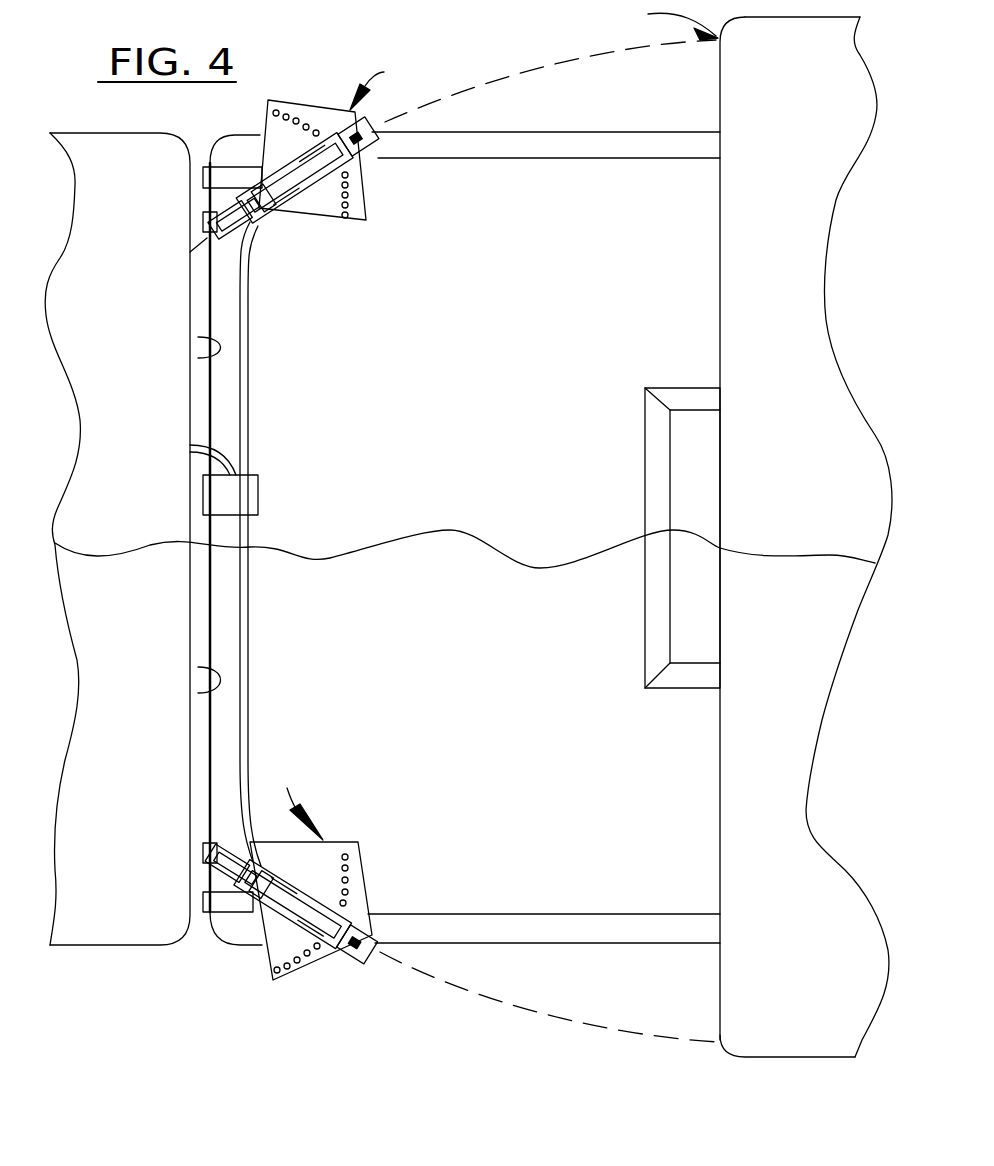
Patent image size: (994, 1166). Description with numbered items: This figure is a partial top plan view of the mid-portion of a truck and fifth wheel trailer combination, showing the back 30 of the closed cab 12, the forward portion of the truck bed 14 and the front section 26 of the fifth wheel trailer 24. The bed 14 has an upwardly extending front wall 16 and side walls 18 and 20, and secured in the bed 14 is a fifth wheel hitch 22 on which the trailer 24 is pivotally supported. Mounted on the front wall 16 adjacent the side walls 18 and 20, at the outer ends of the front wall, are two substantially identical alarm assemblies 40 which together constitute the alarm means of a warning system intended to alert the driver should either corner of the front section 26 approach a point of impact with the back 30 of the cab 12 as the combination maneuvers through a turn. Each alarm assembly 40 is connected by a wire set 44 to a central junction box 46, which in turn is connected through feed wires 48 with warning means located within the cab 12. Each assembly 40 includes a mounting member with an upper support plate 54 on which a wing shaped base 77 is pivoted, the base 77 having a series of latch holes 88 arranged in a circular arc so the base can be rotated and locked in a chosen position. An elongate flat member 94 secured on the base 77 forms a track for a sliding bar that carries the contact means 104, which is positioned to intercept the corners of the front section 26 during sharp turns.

The closed cab 12 is at (145, 322).
The bed 14 is at (502, 362).
The front wall 16 is at (215, 566).
The side wall 18 is at (588, 160).
The side wall 20 is at (548, 913).
The fifth wheel hitch 22 is at (650, 622).
The fifth wheel trailer 24 is at (549, 521).
The front section 26 is at (805, 125).
The back of cab 30 is at (212, 346).
The alarm assembly 40 is at (353, 445).
The wire set 44 is at (244, 405).
The central junction box 46 is at (256, 490).
The feed wires 48 is at (204, 446).
The upper support plate 54 is at (347, 236).
The base 77 is at (362, 188).
The latch holes 88 is at (272, 128).
The elongate flat member 94 is at (333, 142).
The contact means 104 is at (282, 208).